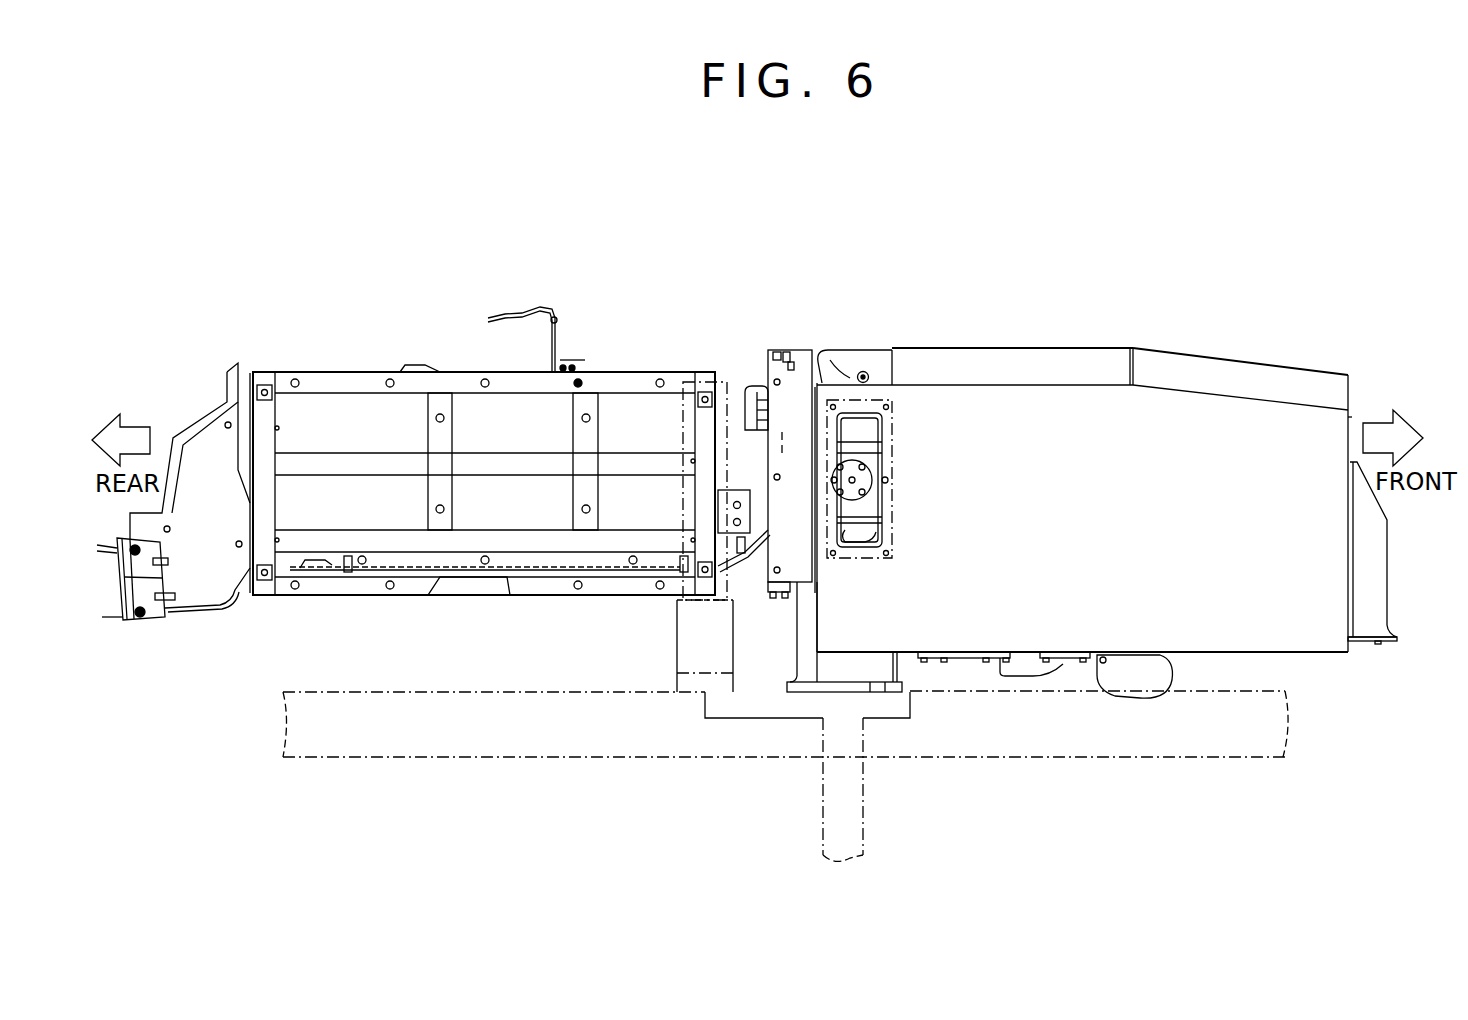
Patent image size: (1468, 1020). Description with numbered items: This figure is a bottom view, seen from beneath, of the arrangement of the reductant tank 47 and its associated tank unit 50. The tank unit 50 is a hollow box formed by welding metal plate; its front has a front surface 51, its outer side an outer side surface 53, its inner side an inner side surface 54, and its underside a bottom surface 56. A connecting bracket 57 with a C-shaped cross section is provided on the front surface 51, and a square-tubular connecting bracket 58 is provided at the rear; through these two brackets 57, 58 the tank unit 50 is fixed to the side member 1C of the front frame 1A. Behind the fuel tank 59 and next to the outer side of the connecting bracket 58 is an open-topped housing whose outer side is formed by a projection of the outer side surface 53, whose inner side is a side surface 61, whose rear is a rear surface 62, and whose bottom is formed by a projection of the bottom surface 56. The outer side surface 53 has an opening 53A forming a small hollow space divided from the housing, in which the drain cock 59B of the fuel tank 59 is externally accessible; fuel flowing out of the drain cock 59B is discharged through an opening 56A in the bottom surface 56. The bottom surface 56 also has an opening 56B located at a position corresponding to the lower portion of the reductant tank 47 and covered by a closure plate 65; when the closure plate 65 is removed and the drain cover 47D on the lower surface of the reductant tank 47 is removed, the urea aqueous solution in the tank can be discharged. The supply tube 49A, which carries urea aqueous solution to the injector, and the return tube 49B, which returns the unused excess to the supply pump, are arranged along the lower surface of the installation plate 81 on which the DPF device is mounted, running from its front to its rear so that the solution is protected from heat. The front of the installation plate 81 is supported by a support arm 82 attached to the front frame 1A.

The front frame 1A is at (785, 776).
The side member 1C is at (843, 789).
The reductant tank 47 is at (899, 430).
The drain cover 47D is at (867, 477).
The supply tube 49A is at (662, 588).
The return tube 49B is at (740, 563).
The tank unit 50 is at (1090, 493).
The front surface 51 is at (1348, 418).
The outer side surface 53 is at (1053, 347).
The opening 53A is at (848, 346).
The inner side surface 54 is at (1280, 652).
The bottom surface 56 is at (1215, 643).
The opening 56A is at (852, 376).
The opening 56B is at (870, 530).
The connecting bracket 57 is at (1370, 578).
The connecting bracket 58 is at (803, 643).
The fuel tank 59 is at (1113, 395).
The drain cock 59B is at (863, 372).
The side surface 61 is at (792, 582).
The rear surface 62 is at (790, 400).
The closure plate 65 is at (887, 495).
The installation plate 81 is at (472, 542).
The support arm 82 is at (683, 427).